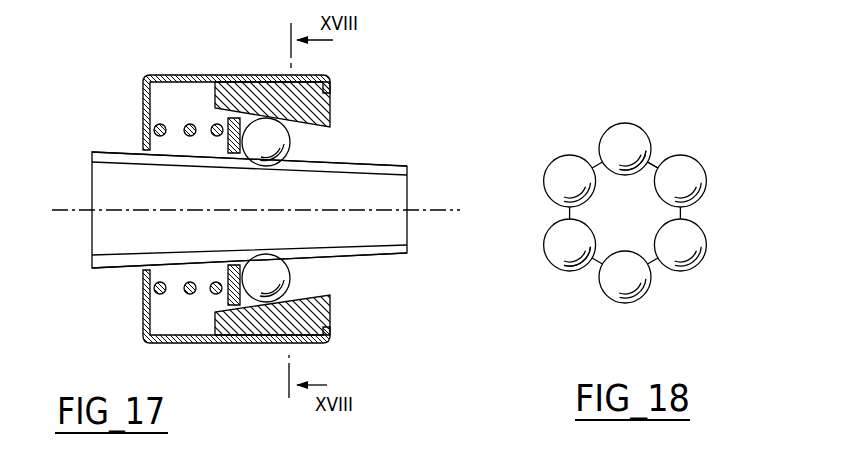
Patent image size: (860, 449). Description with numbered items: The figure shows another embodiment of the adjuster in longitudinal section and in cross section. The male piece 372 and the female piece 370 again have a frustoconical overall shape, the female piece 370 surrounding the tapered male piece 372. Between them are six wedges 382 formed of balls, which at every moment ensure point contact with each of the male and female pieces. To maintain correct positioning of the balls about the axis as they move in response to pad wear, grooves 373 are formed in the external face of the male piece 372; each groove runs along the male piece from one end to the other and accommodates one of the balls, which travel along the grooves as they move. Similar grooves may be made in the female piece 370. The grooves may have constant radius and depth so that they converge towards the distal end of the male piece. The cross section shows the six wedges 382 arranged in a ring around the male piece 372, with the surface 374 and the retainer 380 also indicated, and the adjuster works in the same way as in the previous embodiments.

In FIG. 17, the female piece 370 is at (310, 108).
In FIG. 17, the male piece 372 is at (370, 190).
In FIG. 18, the male piece 372 is at (645, 215).
In FIG. 17, the grooves 373 is at (373, 257).
In FIG. 18, the grooves 373 is at (626, 165).
In FIG. 17, the shaft outer surface 374 is at (366, 159).
In FIG. 18, the shaft outer surface 374 is at (656, 160).
In FIG. 17, the ball retainer 380 is at (214, 117).
In FIG. 17, the wedges 382 is at (284, 142).
In FIG. 18, the wedges 382 is at (649, 139).